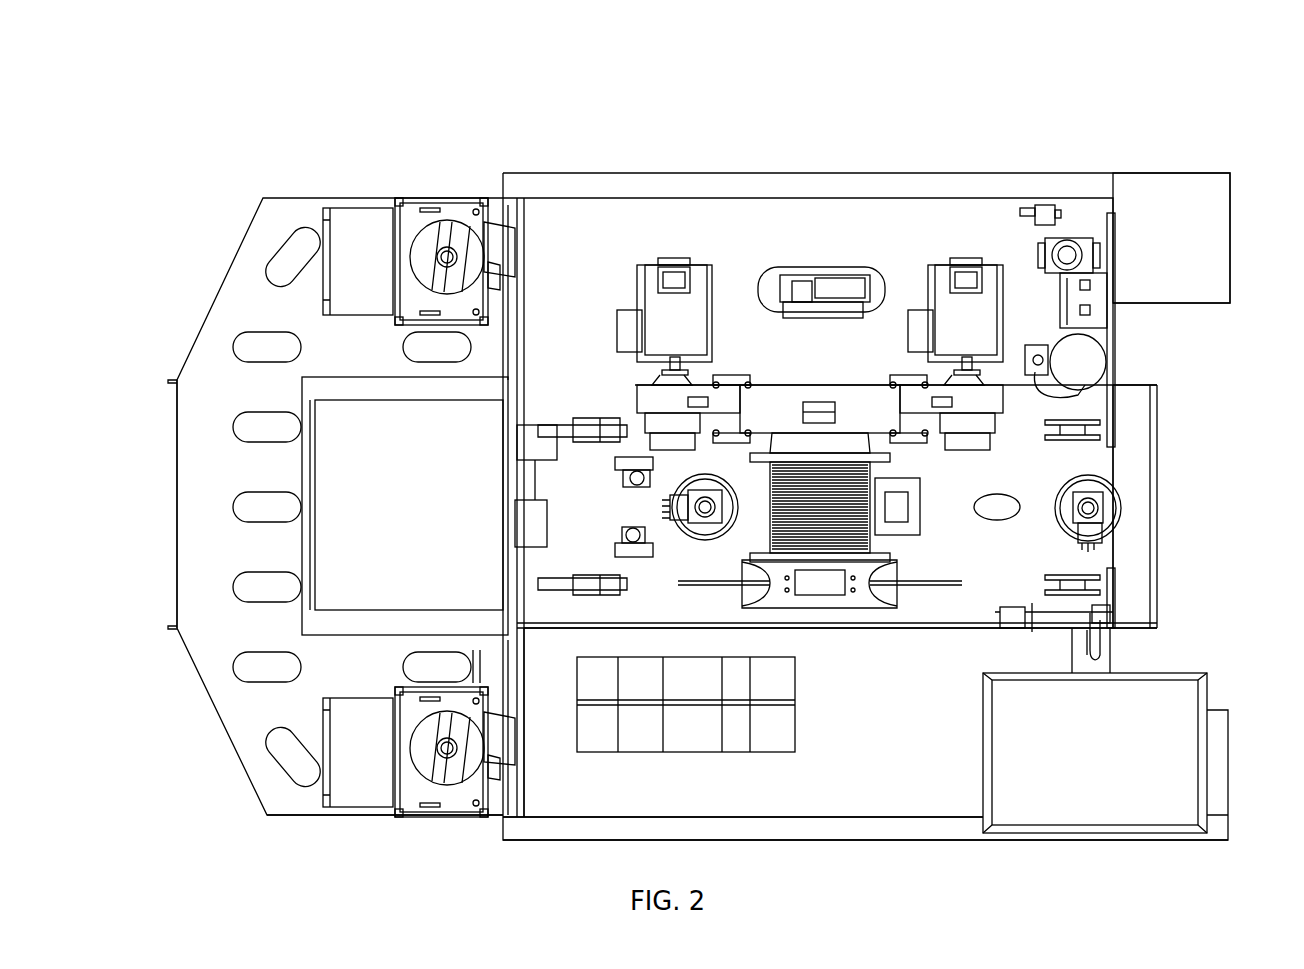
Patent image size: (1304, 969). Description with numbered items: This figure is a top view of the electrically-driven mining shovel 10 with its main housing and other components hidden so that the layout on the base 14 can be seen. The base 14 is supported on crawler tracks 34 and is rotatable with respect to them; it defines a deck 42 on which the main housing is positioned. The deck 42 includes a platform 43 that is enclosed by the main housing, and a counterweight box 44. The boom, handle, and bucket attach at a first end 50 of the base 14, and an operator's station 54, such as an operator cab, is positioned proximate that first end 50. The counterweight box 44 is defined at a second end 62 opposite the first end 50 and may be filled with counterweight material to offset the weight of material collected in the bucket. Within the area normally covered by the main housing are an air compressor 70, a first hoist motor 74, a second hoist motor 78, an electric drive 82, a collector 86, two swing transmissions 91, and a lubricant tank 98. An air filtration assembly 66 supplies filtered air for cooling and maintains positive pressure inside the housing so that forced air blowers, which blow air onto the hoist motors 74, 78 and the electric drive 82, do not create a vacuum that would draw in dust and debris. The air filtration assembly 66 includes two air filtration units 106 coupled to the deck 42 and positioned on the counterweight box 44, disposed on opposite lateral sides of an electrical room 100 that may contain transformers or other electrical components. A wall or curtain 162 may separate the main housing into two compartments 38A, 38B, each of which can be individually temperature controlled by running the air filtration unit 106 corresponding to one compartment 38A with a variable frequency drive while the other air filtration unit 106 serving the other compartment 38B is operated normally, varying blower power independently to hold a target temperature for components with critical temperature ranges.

The mining shovel 10 is at (355, 78).
The base 14 is at (510, 145).
The crawler tracks 34 is at (1167, 190).
The compartment 38A is at (927, 772).
The compartment 38B is at (1008, 562).
The deck 42 is at (568, 810).
The platform 43 is at (897, 710).
The counterweight box 44 is at (248, 292).
The first end 50 is at (1200, 562).
The operator's station 54 is at (1092, 807).
The second end 62 is at (142, 494).
The air filtration assembly 66 is at (372, 843).
The air compressor 70 is at (818, 267).
The first hoist motor 74 is at (698, 262).
The second hoist motor 78 is at (988, 262).
The electric drive 82 is at (770, 738).
The collector 86 is at (920, 498).
The swing transmissions 91 is at (707, 525).
The lubricant tank 98 is at (1103, 350).
The electrical room 100 is at (328, 592).
The air filtration units 106 is at (357, 218).
The wall or curtain 162 is at (943, 627).